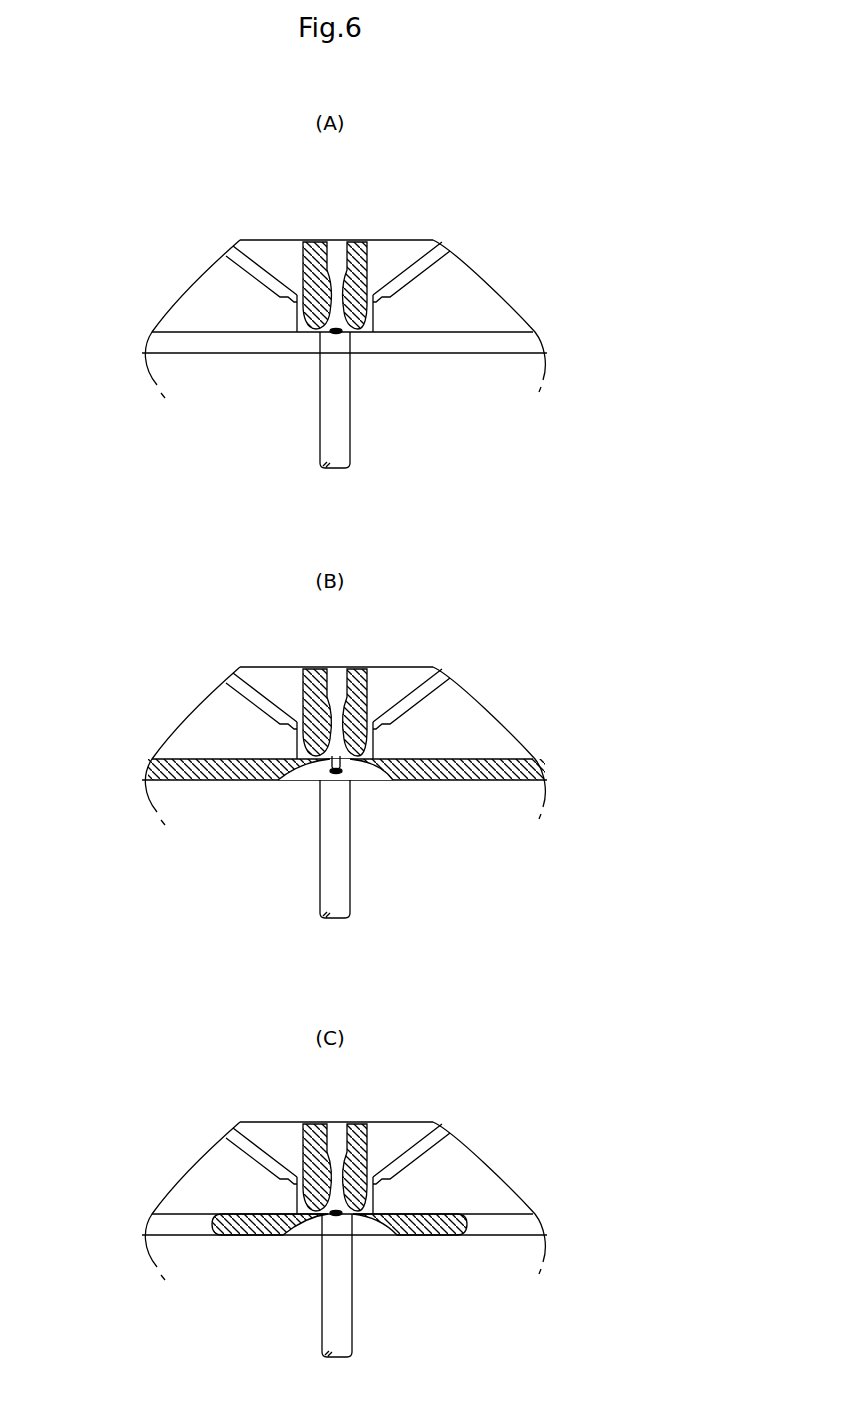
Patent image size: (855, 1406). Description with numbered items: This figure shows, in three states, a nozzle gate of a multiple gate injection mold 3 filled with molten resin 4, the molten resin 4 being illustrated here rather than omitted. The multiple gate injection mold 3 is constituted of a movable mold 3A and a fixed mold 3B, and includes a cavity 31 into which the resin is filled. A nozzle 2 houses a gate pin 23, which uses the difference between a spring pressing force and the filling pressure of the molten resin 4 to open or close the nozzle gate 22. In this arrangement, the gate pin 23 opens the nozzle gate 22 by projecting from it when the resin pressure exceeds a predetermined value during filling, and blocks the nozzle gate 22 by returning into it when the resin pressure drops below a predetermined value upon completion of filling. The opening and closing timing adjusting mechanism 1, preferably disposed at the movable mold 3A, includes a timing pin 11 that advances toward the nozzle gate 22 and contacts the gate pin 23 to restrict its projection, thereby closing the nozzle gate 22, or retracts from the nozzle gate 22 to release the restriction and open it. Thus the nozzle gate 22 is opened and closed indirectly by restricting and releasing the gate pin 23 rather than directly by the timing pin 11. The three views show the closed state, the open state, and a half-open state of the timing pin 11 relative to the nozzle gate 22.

The opening and closing timing adjusting mechanism 1 is at (347, 856).
The timing pin 11 is at (335, 397).
The nozzle 2 is at (383, 245).
The nozzle gate 22 is at (312, 343).
The gate pin 23 is at (332, 280).
The multiple gate injection mold 3 is at (294, 760).
The movable mold 3A is at (312, 804).
The fixed mold 3B is at (187, 312).
The cavity 31 is at (481, 342).
The molten resin 4 is at (367, 264).